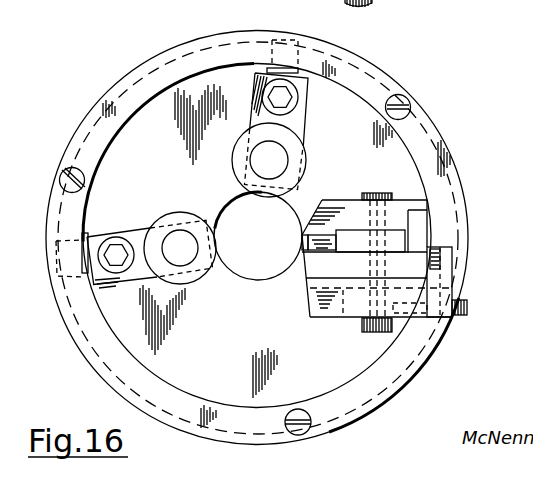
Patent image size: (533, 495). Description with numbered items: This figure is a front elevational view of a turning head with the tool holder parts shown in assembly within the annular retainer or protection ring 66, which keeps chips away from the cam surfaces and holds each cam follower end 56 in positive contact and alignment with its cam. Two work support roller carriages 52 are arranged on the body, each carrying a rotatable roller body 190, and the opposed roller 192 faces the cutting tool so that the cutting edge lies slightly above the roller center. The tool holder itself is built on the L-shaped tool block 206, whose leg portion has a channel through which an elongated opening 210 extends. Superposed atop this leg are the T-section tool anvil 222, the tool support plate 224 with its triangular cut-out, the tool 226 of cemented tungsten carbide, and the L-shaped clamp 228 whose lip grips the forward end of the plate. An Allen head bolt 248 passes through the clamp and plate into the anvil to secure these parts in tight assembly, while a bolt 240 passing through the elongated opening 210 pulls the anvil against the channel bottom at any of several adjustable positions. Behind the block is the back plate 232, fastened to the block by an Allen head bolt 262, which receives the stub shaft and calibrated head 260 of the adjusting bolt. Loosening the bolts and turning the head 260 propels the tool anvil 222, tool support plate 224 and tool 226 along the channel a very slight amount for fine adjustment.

The retainer or protection ring 66 is at (365, 398).
The cam follower end 56 is at (268, 26).
The roller carriage 52 is at (308, 121).
The roller body 190 is at (304, 160).
The opposed roller 192 is at (155, 219).
The clamp 228 is at (412, 213).
The tool 226 is at (306, 242).
The tool support plate 224 is at (397, 247).
The tool anvil 222 is at (302, 273).
The tool block 206 is at (308, 302).
The elongated opening 210 is at (350, 318).
The Allen head bolt 248 is at (362, 193).
The bolt 240 is at (372, 334).
The head of the adjusting bolt 260 is at (440, 247).
The Allen head bolt 262 is at (462, 300).
The back plate 232 is at (445, 315).